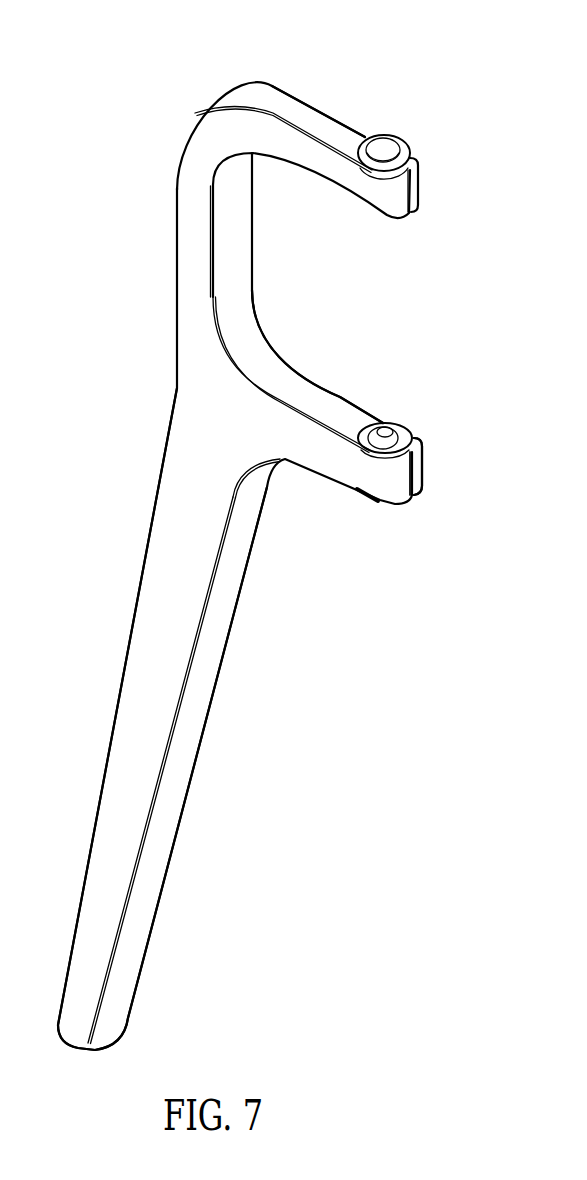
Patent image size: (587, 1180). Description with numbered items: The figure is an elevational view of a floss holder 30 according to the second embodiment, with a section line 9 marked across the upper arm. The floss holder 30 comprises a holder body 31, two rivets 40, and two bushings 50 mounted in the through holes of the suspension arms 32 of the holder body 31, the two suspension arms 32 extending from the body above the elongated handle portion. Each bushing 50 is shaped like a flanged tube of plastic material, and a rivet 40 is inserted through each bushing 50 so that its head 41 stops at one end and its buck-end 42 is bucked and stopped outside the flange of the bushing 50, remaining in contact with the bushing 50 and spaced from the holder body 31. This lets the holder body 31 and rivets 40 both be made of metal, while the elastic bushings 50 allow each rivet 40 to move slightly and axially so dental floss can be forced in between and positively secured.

The section line 9- 9 is at (167, 28).
The floss holder 30 is at (126, 293).
The holder body 31 is at (173, 447).
The suspension arm 32 is at (330, 120).
The rivet 40 is at (390, 132).
The head 41 is at (402, 153).
The buck-end 42 is at (397, 430).
The bushing 50 is at (418, 442).